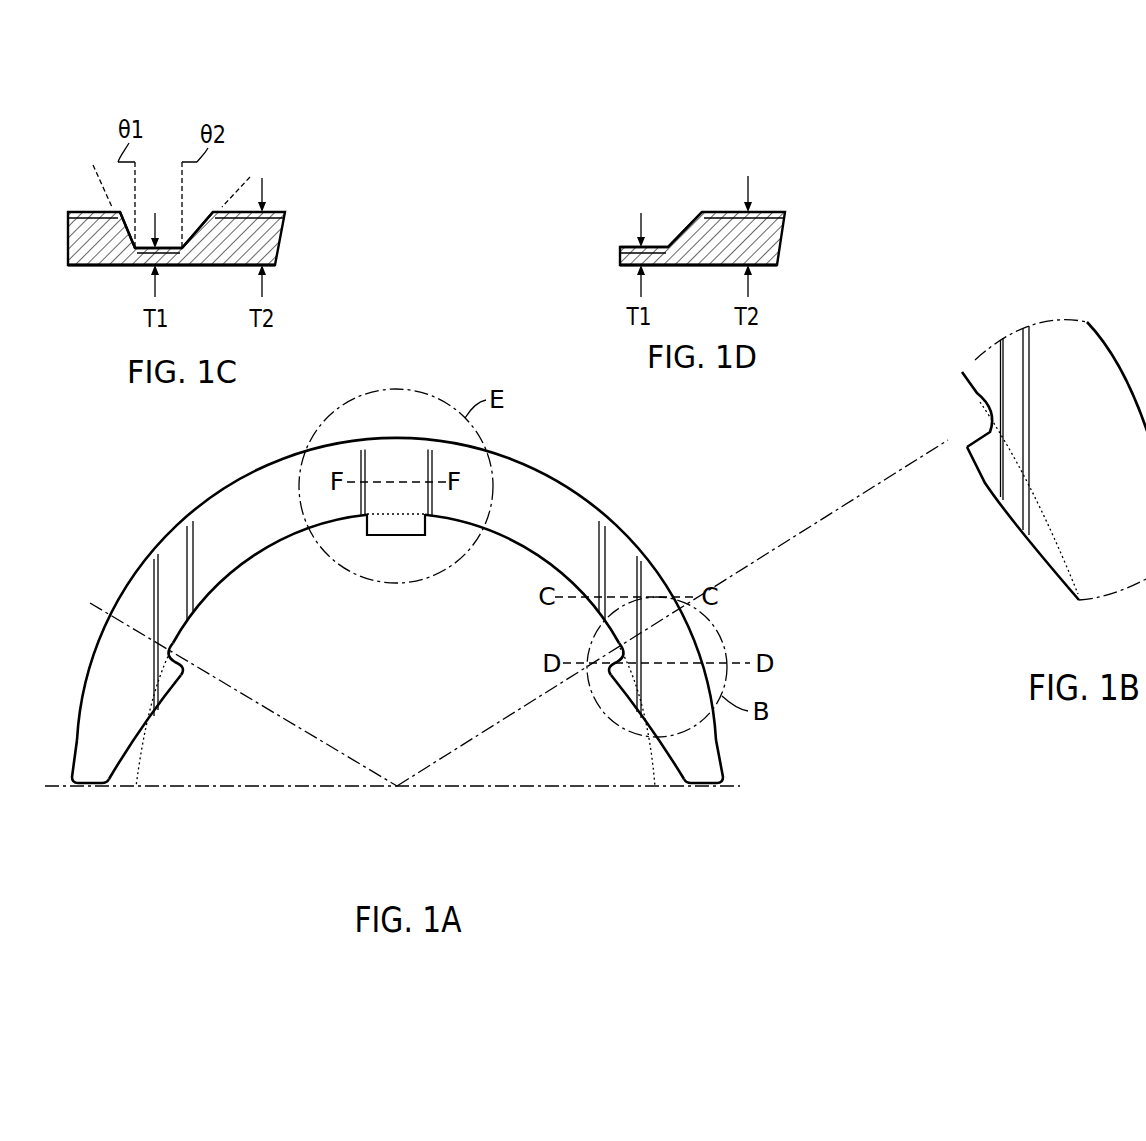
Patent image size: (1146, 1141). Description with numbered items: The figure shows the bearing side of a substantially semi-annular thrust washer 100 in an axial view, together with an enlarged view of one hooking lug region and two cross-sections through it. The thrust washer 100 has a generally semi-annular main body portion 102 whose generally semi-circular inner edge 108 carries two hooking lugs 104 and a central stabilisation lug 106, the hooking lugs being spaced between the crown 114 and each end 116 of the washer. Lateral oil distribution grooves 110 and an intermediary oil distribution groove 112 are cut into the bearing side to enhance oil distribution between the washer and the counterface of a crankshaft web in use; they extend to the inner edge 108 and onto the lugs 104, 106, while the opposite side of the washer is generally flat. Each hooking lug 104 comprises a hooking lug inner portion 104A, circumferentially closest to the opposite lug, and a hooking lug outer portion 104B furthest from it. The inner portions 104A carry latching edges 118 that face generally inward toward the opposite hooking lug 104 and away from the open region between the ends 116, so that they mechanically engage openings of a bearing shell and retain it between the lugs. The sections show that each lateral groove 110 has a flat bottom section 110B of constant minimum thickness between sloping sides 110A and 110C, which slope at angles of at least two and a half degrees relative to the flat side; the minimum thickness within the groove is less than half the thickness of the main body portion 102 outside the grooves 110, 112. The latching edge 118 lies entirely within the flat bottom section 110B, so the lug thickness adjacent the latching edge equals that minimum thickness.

In FIG. 1A, the thrust washer 100 is at (148, 474).
In FIG. 1A, the main body portion 102 is at (231, 535).
In FIG. 1B, the main body portion 102 is at (1068, 477).
In FIG. 1A, the hooking lugs 104 is at (383, 773).
In FIG. 1A, the hooking lug inner portion 104A is at (176, 684).
In FIG. 1B, the hooking lug inner portion 104A is at (957, 503).
In FIG. 1A, the hooking lug outer portion 104B is at (152, 710).
In FIG. 1B, the hooking lug outer portion 104B is at (1019, 556).
In FIG. 1A, the stabilisation lug 106 is at (392, 537).
In FIG. 1A, the inner edge 108 is at (238, 577).
In FIG. 1A, the lateral oil distribution grooves 110 is at (178, 558).
In FIG. 1C, the sloping side 110A is at (130, 232).
In FIG. 1B, the flat bottom section 110B is at (975, 362).
In FIG. 1C, the flat bottom section 110B is at (168, 248).
In FIG. 1D, the flat bottom section 110B is at (656, 245).
In FIG. 1B, the sloping side 110C is at (1015, 353).
In FIG. 1C, the sloping side 110C is at (205, 230).
In FIG. 1D, the sloping side 110C is at (692, 225).
In FIG. 1A, the intermediary oil distribution groove 112 is at (407, 473).
In FIG. 1A, the crown 114 is at (393, 449).
In FIG. 1A, the end 116 is at (297, 836).
In FIG. 1A, the latching edge 118 is at (177, 655).
In FIG. 1B, the latching edge 118 is at (992, 431).